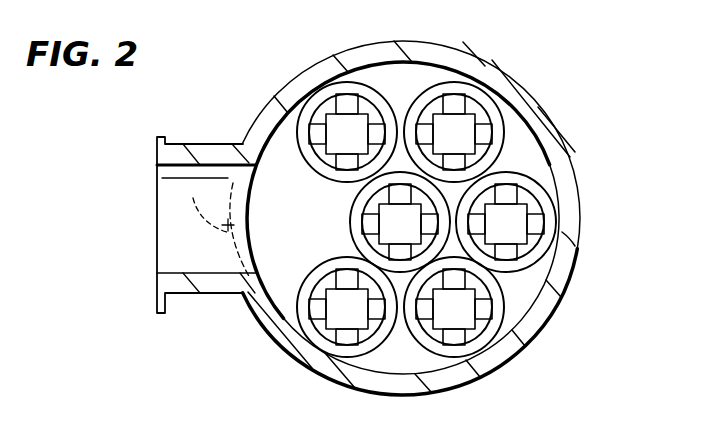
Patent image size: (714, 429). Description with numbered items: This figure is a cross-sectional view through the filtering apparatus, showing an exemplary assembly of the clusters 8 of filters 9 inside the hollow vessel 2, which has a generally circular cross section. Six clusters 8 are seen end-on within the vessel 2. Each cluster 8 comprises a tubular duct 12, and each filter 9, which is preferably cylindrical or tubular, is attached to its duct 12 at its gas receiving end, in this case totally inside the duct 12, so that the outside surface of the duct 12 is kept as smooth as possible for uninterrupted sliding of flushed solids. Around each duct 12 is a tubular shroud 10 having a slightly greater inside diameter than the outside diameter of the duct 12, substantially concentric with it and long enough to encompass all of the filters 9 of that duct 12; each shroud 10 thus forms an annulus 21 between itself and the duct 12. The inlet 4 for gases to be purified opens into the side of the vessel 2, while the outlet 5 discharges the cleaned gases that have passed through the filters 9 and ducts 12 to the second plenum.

The hollow vessel 2 is at (537, 323).
The inlet 4 is at (206, 292).
The outlet 5 is at (218, 193).
The cluster of filter elements 8 is at (318, 102).
The filter 9 is at (427, 104).
The shroud 10 is at (505, 130).
The duct 12 is at (480, 100).
The annulus 21 is at (562, 232).